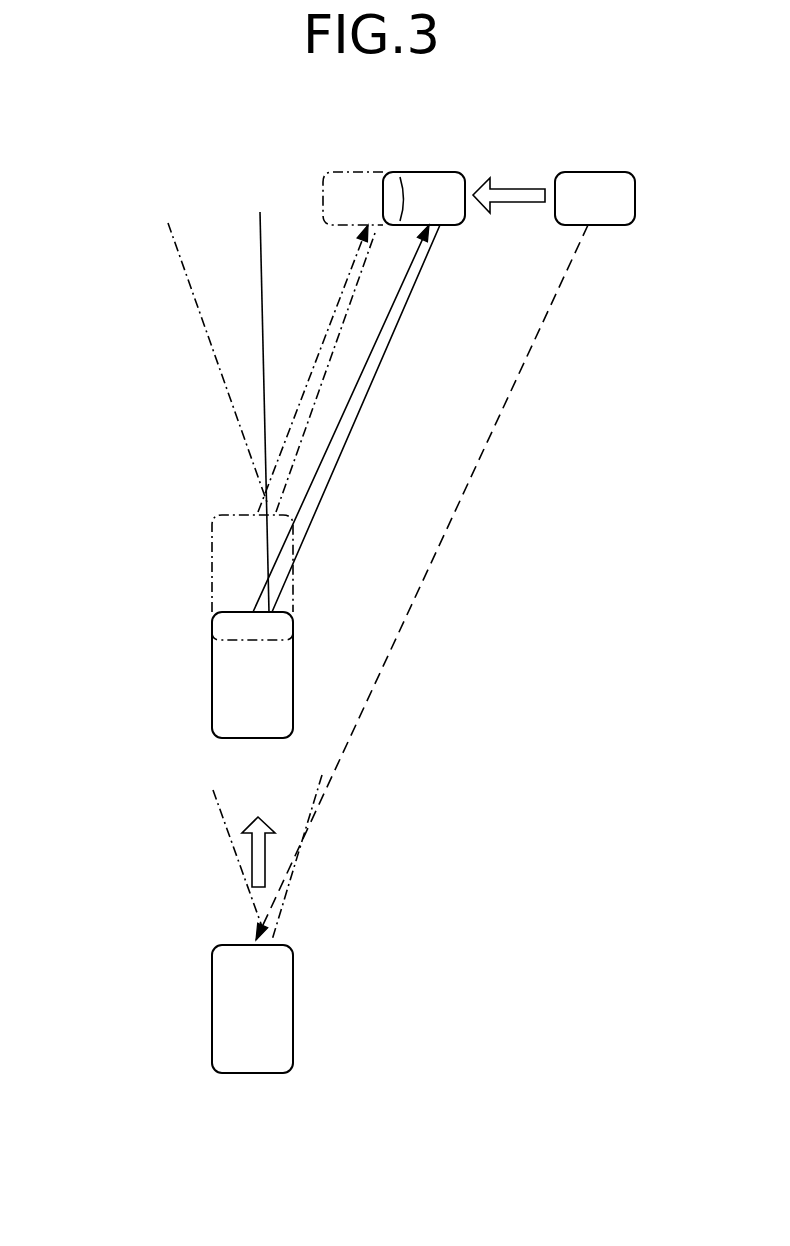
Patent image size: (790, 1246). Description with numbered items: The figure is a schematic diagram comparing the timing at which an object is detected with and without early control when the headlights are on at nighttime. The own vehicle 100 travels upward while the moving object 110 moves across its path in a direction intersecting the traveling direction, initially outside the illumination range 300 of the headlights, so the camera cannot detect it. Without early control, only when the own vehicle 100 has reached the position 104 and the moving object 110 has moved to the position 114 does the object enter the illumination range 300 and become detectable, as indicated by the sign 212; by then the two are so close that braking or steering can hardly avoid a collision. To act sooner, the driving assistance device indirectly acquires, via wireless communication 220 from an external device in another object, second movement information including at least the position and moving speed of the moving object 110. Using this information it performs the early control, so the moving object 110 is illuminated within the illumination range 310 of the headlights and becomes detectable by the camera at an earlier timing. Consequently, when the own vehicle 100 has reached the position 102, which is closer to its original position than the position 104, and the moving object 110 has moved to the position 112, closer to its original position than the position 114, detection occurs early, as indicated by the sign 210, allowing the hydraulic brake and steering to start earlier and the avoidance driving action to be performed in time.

The own vehicle 100 is at (212, 1018).
The position 102 is at (212, 672).
The position 104 is at (212, 582).
The moving object 110 is at (588, 172).
The position 112 is at (428, 172).
The position 114 is at (353, 172).
The sign 210 is at (390, 307).
The sign 212 is at (317, 353).
The wireless communication 220 is at (427, 575).
The illumination range 300 is at (208, 342).
The illumination range 310 is at (335, 463).